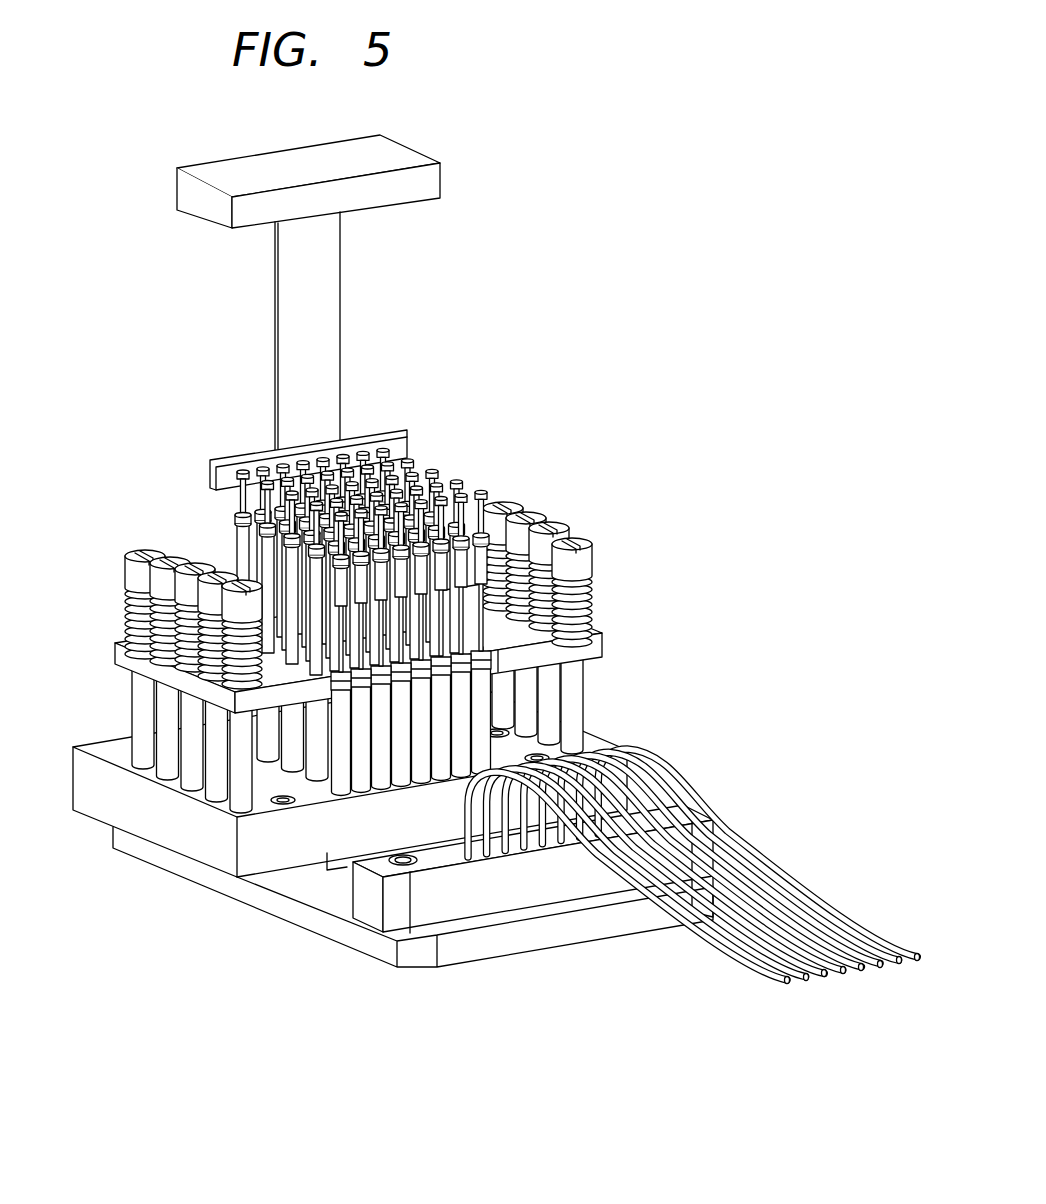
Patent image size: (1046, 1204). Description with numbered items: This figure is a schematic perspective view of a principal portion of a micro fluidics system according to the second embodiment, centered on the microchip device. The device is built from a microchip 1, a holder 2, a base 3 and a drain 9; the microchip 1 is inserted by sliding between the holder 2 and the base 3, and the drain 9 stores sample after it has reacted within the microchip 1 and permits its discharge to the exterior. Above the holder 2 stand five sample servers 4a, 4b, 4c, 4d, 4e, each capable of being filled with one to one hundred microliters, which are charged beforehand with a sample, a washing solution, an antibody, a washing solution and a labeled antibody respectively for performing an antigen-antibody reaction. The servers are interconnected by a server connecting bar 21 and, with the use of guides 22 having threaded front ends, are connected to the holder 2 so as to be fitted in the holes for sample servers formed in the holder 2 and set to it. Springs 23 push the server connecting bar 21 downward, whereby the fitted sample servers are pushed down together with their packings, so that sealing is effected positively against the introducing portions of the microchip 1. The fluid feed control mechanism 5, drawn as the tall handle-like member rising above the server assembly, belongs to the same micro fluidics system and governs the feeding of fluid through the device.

The microchip 1 is at (340, 862).
The holder 2 is at (173, 833).
The base 3 is at (380, 938).
The sample server 4a is at (477, 727).
The sample server 4b is at (257, 777).
The sample server 4c is at (290, 747).
The sample server 4d is at (267, 728).
The sample server 4e is at (237, 517).
The fluid feed control mechanism 5 is at (342, 300).
The drain 9 is at (453, 910).
The server connecting bar 21 is at (605, 638).
The guide 22 is at (132, 693).
The spring 23 is at (593, 572).